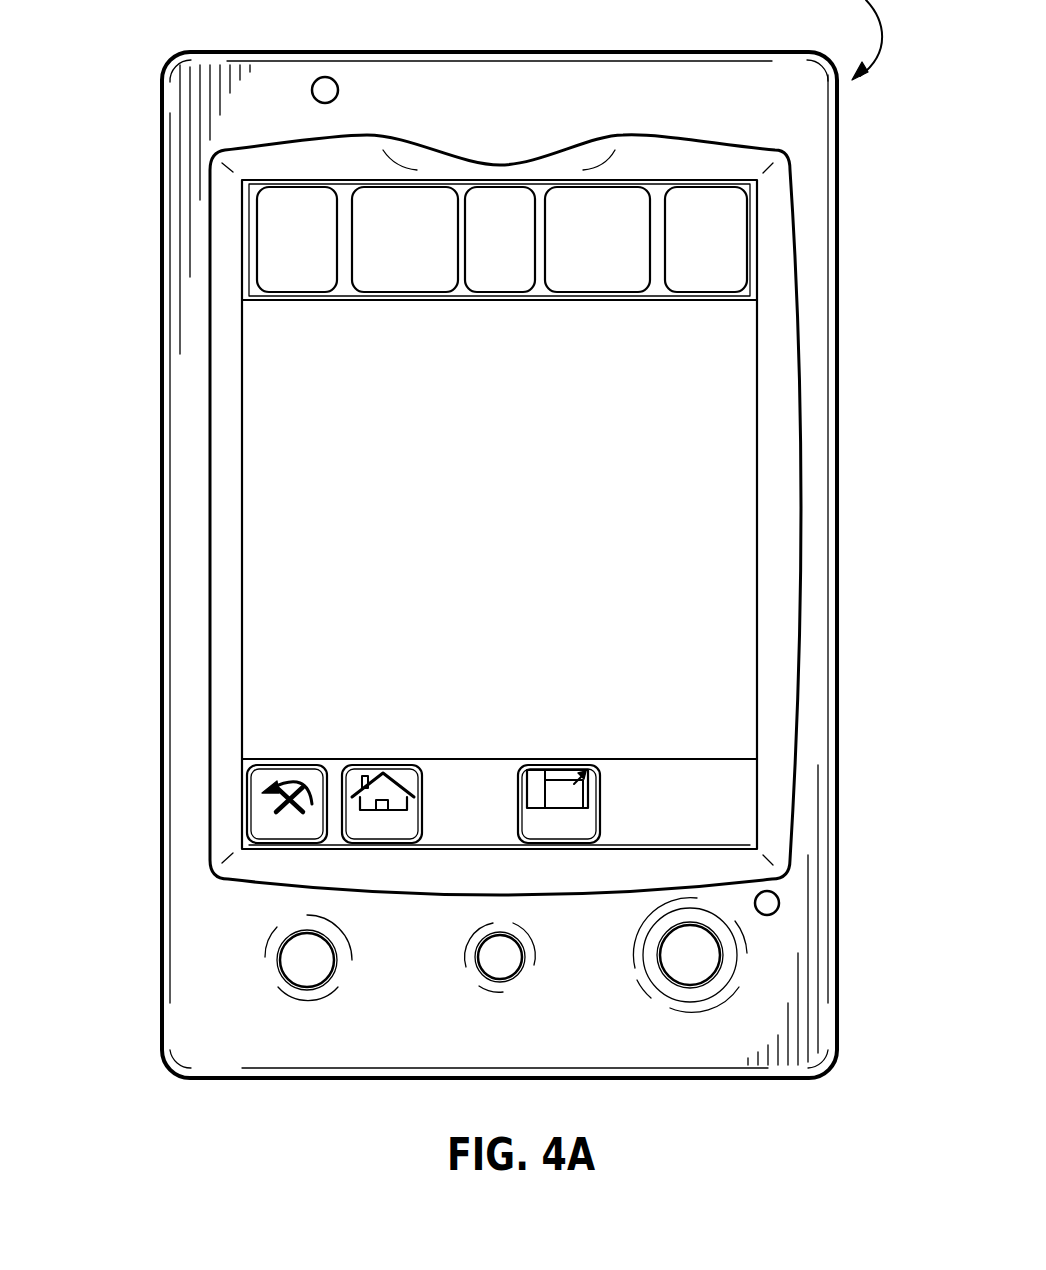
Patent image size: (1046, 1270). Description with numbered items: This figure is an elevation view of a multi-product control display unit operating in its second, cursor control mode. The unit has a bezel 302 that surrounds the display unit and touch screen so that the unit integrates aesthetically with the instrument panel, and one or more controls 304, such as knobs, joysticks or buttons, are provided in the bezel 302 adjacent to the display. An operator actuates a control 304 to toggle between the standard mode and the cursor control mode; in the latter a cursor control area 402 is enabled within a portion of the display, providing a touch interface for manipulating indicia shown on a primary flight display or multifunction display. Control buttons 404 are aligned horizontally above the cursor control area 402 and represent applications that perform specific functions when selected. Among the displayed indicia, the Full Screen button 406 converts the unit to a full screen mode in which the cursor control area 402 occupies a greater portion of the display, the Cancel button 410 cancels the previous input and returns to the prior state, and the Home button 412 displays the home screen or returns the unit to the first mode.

The bezel 302 is at (807, 133).
The controls 304 is at (315, 962).
The cursor control area 402 is at (713, 505).
The control buttons 404 is at (702, 197).
The Full Screen button 406 is at (593, 805).
The Cancel button 410 is at (262, 802).
The Home button 412 is at (398, 833).